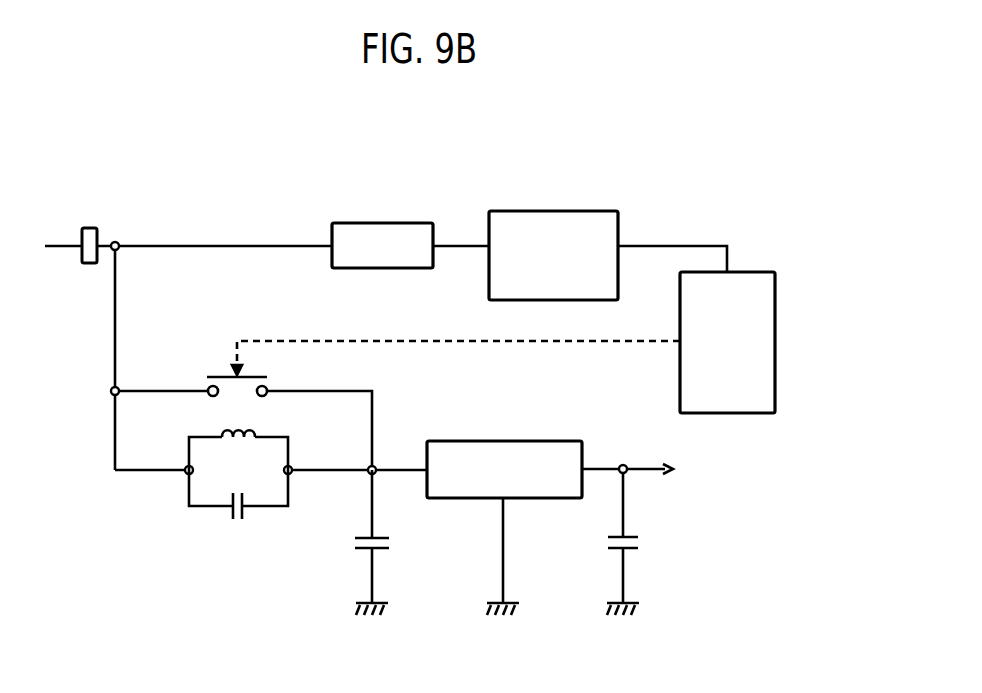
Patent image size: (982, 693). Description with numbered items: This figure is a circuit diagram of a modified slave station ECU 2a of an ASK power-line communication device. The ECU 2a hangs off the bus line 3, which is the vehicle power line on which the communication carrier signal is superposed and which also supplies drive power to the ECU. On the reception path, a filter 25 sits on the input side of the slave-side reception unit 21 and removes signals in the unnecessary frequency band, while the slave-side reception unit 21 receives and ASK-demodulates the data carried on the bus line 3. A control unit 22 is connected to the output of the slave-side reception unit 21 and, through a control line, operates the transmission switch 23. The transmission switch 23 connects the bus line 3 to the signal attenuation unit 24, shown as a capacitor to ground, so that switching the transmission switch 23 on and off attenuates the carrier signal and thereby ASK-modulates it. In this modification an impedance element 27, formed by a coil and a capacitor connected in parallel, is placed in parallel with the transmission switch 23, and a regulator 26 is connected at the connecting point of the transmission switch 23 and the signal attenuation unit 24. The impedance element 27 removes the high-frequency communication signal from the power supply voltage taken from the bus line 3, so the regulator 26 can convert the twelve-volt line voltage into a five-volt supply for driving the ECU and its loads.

The bus line 3 is at (62, 243).
The slave station ECU 2a is at (651, 176).
The slave-side reception unit 21 is at (553, 211).
The control unit 22 is at (775, 345).
The transmission switch 23 is at (268, 398).
The signal attenuation unit 24 is at (389, 545).
The filter 25 is at (382, 223).
The regulator 26 is at (505, 441).
The impedance element 27 is at (257, 515).